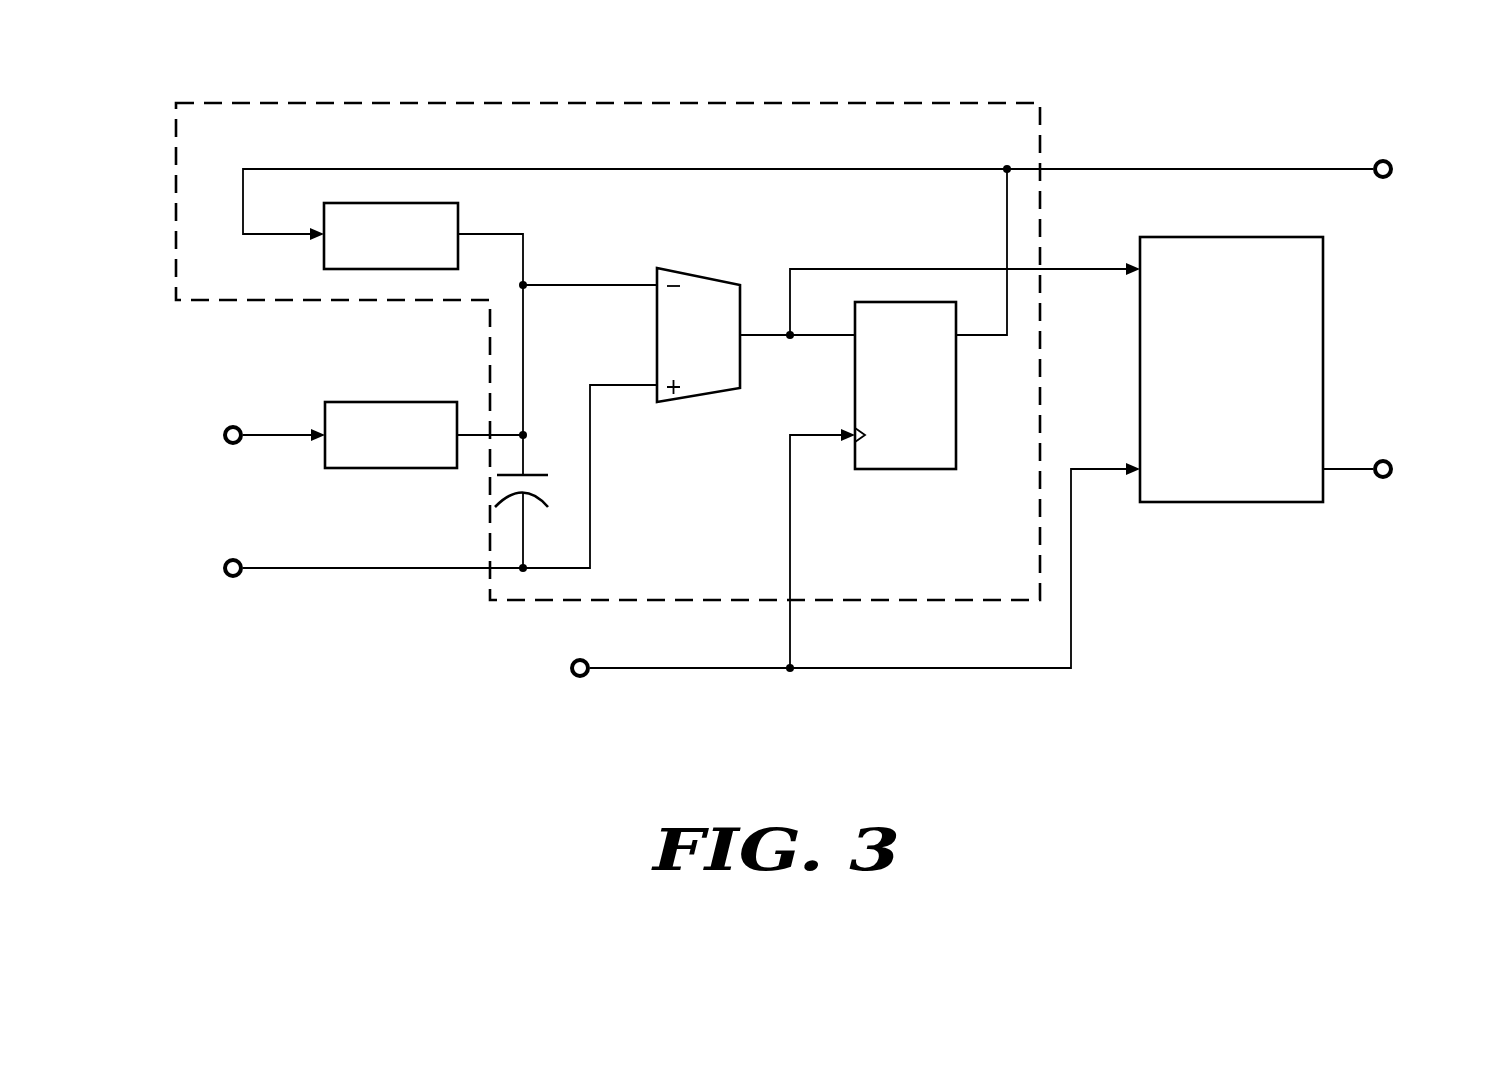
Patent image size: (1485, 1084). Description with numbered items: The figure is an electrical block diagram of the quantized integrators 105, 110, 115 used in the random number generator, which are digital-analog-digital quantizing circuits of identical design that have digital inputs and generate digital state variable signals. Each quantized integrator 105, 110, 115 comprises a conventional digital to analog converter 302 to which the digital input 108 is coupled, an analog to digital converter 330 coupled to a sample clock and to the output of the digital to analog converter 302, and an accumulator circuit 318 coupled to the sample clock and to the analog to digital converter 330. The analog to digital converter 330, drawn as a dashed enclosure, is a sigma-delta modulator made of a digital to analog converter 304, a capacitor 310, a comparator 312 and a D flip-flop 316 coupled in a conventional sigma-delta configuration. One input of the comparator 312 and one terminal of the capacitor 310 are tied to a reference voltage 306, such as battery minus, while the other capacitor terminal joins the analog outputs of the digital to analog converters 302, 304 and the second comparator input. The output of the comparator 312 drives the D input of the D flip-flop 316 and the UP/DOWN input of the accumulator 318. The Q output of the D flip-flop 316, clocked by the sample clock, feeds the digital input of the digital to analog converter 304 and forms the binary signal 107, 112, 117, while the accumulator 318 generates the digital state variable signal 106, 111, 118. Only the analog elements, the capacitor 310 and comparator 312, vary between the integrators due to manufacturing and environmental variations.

The analog to digital converter 330 is at (457, 103).
The digital to analog converter 304 is at (458, 203).
The digital to analog converter 302 is at (325, 402).
The comparator 312 is at (658, 269).
The D flip-flop 316 is at (956, 367).
The accumulator circuit 318 is at (1140, 237).
The capacitor 310 is at (532, 468).
The digital input 108 is at (233, 447).
The reference voltage 306 is at (217, 582).
The binary signal 107 is at (1246, 205).
The binary signal 112 is at (1246, 205).
The binary signal 117 is at (1397, 183).
The state variable signal 106 is at (1376, 501).
The state variable signal 111 is at (1376, 501).
The state variable signal 118 is at (1395, 487).
The quantized integrator 105 is at (830, 397).
The quantized integrator 110 is at (830, 397).
The quantized integrator 115 is at (830, 397).